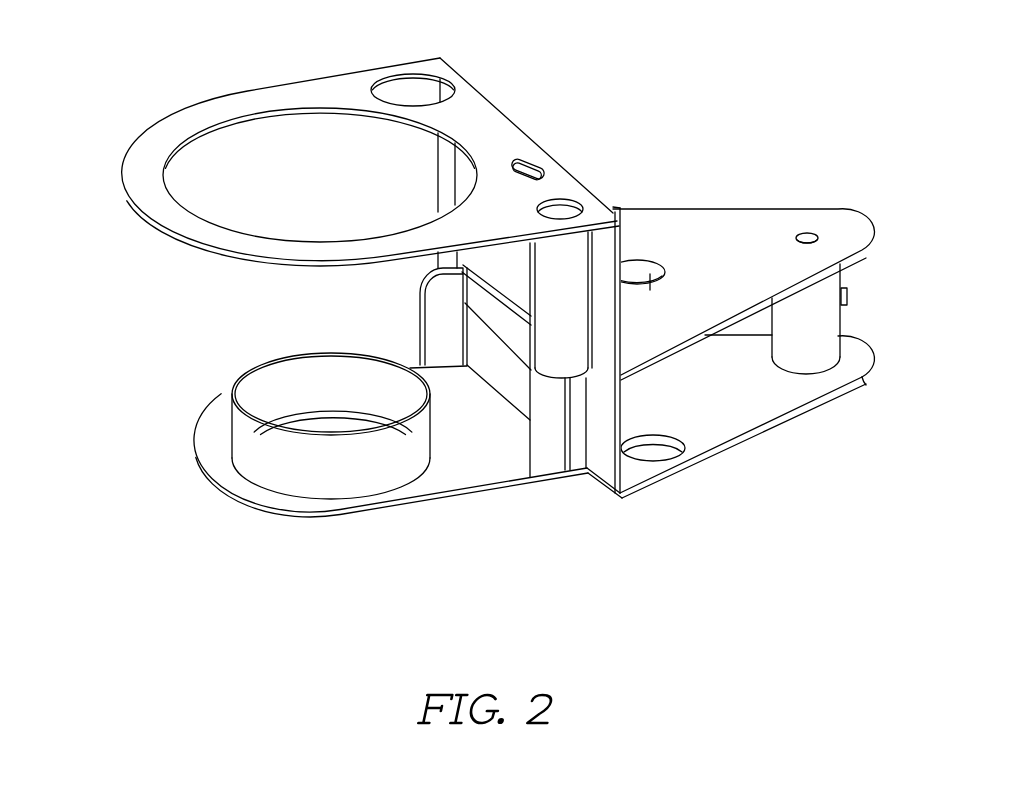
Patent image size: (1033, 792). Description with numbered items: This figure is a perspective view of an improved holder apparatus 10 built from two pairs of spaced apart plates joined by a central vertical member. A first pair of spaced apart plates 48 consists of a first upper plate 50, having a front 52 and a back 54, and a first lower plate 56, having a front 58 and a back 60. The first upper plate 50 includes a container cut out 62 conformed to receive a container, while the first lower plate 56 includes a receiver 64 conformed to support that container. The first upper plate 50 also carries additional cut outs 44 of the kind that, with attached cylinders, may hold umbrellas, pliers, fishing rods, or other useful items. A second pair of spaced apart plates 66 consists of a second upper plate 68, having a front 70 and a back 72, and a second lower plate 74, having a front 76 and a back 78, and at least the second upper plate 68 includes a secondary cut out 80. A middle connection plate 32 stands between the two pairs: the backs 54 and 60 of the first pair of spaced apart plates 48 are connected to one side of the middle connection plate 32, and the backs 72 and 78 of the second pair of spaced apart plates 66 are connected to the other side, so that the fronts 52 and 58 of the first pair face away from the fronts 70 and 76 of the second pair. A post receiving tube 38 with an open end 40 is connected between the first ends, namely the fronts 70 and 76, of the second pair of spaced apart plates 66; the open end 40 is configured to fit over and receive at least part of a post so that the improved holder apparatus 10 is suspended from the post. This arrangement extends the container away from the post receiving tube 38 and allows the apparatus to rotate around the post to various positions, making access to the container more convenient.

The improved holder apparatus 10 is at (150, 363).
The first pair of spaced apart plates 48 is at (92, 300).
The first upper plate 50 is at (318, 84).
The front 52 is at (128, 212).
The back 54 is at (508, 112).
The container cut out 62 is at (264, 148).
The cut outs 44 is at (402, 85).
The back 60 is at (515, 402).
The first lower plate 56 is at (405, 483).
The back 78 is at (620, 497).
The front 58 is at (207, 476).
The receiver 64 is at (277, 465).
The back 72 is at (623, 350).
The second pair of spaced apart plates 66 is at (878, 281).
The second upper plate 68 is at (725, 230).
The front 70 is at (843, 235).
The secondary cut out 80 is at (634, 272).
The post receiving tube 38 is at (820, 353).
The second lower plate 74 is at (745, 413).
The front 76 is at (868, 360).
The open end 40 is at (822, 418).
The middle connection plate 32 is at (623, 398).